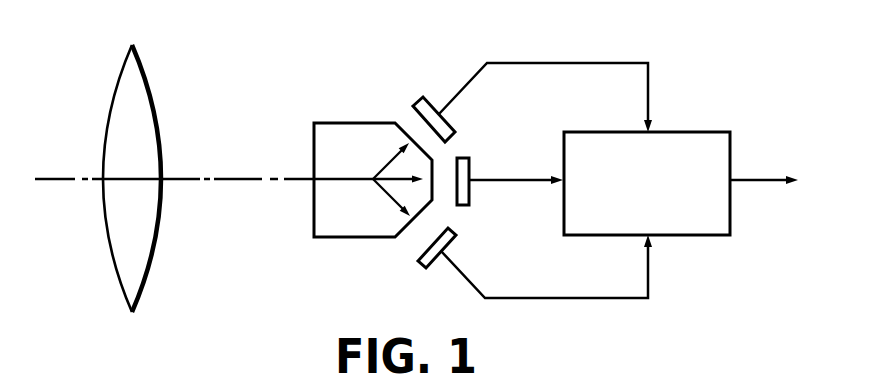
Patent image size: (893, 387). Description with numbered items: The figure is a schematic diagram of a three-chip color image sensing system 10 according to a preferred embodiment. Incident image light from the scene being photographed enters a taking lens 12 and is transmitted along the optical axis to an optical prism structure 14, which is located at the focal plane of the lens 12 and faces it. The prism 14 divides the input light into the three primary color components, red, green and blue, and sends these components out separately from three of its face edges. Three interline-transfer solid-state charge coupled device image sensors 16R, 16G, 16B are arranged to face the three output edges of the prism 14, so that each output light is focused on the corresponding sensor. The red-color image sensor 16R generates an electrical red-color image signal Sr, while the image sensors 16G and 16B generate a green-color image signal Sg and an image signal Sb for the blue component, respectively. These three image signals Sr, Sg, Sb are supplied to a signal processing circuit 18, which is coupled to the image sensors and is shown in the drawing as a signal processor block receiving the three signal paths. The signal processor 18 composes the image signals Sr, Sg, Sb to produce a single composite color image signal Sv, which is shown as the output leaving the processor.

The three-chip color image sensing system 10 is at (542, 38).
The taking lens 12 is at (154, 102).
The optical prism structure 14 is at (340, 122).
The red-color image sensor 16R is at (424, 96).
The green-color image sensor 16G is at (470, 162).
The blue-color image sensor 16B is at (428, 263).
The signal processing circuit 18 is at (713, 130).
The red-color image signal Sr is at (585, 63).
The green-color image signal Sg is at (502, 181).
The blue-color image signal Sb is at (573, 299).
The composite color image signal Sv is at (766, 178).